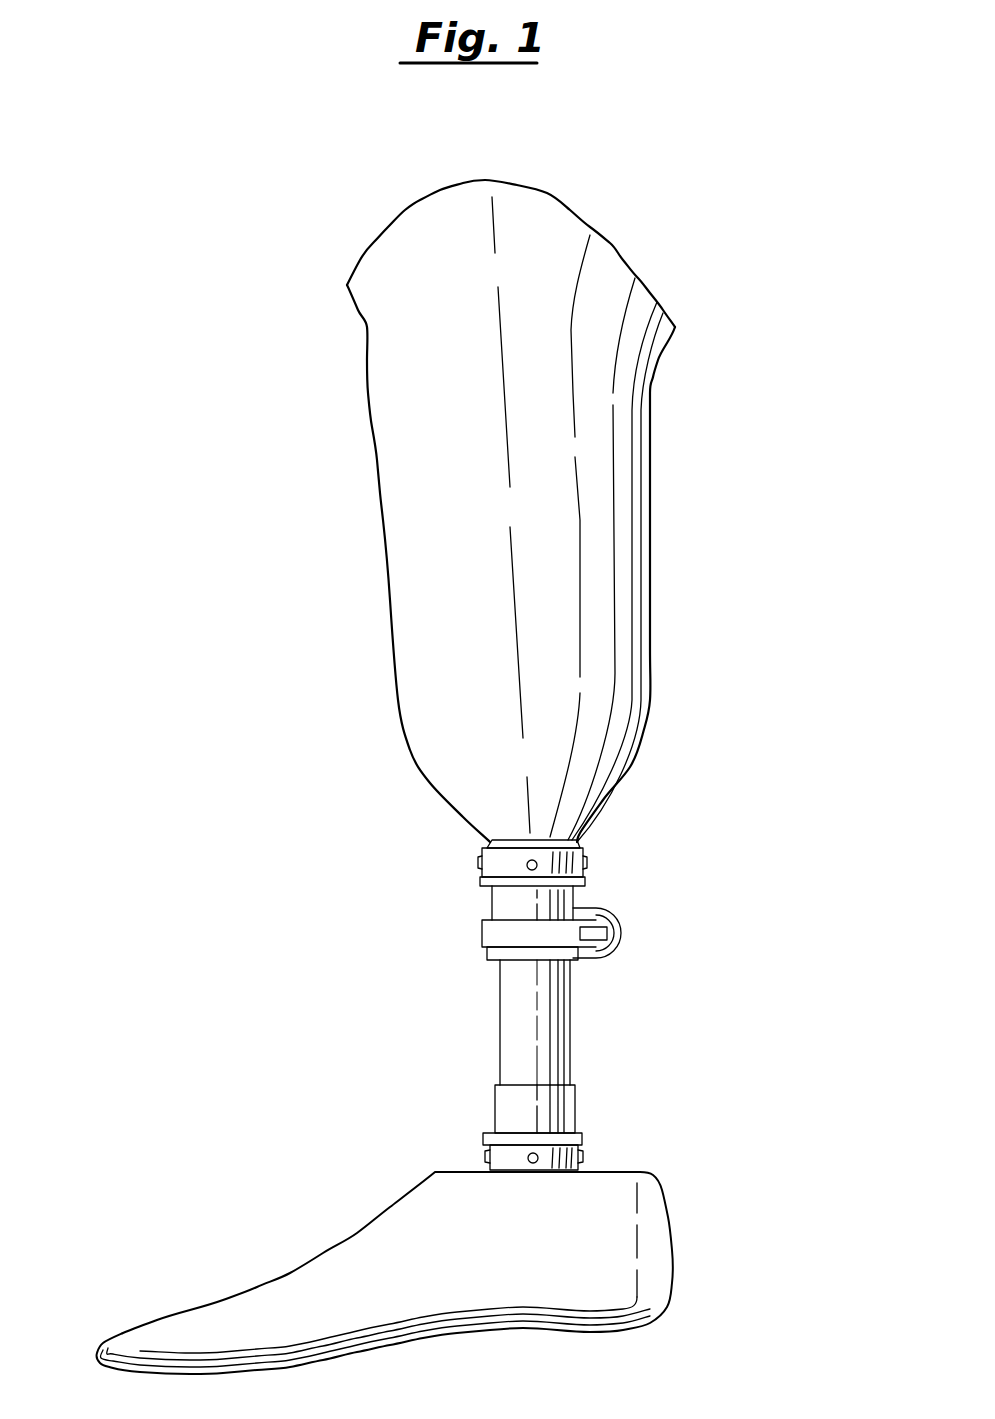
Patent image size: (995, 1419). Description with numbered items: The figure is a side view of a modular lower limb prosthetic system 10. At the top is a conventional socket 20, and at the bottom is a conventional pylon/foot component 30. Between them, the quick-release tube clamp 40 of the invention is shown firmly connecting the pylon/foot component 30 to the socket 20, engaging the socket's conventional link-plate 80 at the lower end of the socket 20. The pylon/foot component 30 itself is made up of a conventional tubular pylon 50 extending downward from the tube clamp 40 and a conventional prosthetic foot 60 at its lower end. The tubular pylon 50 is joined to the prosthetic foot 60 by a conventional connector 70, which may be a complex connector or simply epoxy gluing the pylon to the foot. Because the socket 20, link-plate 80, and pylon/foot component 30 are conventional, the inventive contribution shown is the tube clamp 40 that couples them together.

The modular lower limb prosthetic system 10 is at (230, 617).
The socket 20 is at (649, 510).
The pylon/foot component 30 is at (618, 1103).
The quick-release tube clamp 40 is at (635, 880).
The tubular pylon 50 is at (572, 1042).
The prosthetic foot 60 is at (265, 1302).
The connector 70 is at (493, 1118).
The link-plate 80 is at (503, 840).